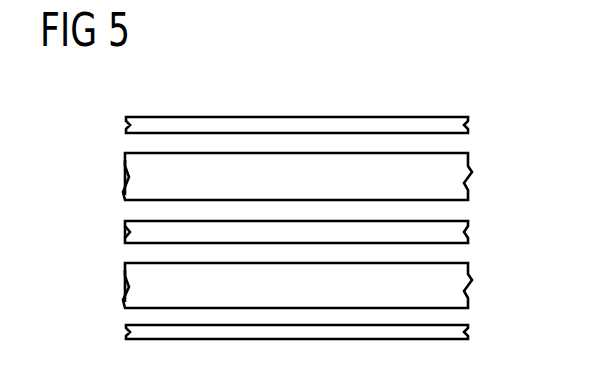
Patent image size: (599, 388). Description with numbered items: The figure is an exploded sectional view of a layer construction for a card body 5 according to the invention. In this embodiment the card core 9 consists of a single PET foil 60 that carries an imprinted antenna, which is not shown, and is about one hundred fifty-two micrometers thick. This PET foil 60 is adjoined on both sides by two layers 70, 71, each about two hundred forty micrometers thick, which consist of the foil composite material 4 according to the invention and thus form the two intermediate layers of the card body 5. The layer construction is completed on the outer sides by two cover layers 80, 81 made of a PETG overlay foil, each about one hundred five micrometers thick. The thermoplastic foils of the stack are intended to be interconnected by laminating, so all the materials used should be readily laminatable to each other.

The card body 5 is at (443, 92).
The cover layer 80 is at (468, 125).
The layer 70 is at (460, 181).
The PET foil 60 is at (465, 231).
The layer 71 is at (460, 284).
The cover layer 81 is at (468, 332).
The foil composite material 4 is at (120, 177).
The card core 9 is at (120, 232).